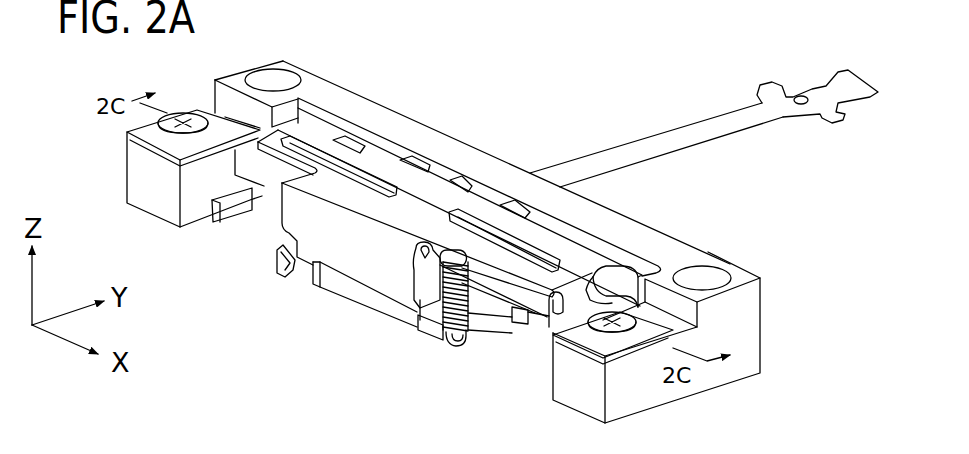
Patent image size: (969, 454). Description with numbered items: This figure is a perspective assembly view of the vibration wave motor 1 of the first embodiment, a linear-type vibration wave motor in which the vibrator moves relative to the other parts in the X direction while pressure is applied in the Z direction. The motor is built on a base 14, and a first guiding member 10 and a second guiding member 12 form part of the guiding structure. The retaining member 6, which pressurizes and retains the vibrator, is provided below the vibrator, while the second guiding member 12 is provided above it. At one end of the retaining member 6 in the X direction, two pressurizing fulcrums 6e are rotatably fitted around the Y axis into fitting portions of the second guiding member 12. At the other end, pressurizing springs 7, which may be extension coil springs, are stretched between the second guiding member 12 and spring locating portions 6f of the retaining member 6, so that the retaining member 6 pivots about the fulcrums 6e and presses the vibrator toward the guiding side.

The vibration wave motor 1 is at (522, 132).
The retaining member 6 is at (382, 303).
The pressurizing fulcrum 6e is at (277, 260).
The spring locating portion 6f is at (463, 333).
The pressurizing spring 7 is at (437, 328).
The first guiding member 10 is at (597, 277).
The second guiding member 12 is at (417, 177).
The base 14 is at (667, 392).